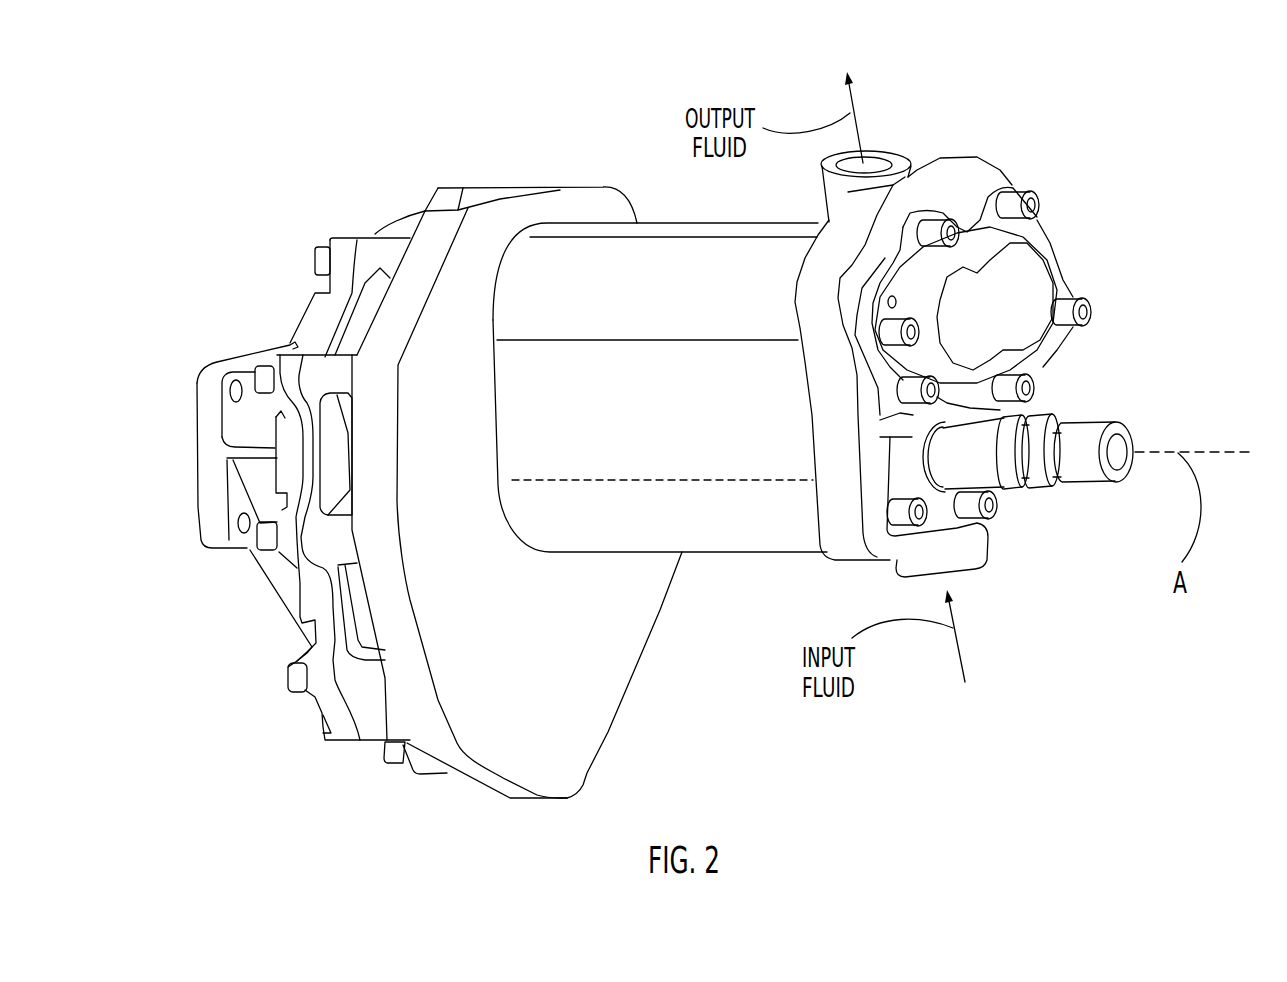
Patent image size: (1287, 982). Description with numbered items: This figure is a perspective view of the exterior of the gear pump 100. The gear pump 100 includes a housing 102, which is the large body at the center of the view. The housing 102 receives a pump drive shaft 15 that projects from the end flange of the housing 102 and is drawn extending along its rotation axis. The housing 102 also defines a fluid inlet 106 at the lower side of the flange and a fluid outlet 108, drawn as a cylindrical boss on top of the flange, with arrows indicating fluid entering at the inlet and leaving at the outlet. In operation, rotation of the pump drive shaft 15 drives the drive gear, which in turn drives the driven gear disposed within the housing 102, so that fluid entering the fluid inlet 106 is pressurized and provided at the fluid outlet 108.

The gear pump 100 is at (343, 790).
The housing 102 is at (748, 513).
The fluid inlet 106 is at (985, 592).
The fluid outlet 108 is at (891, 122).
The pump drive shaft 15 is at (1158, 413).